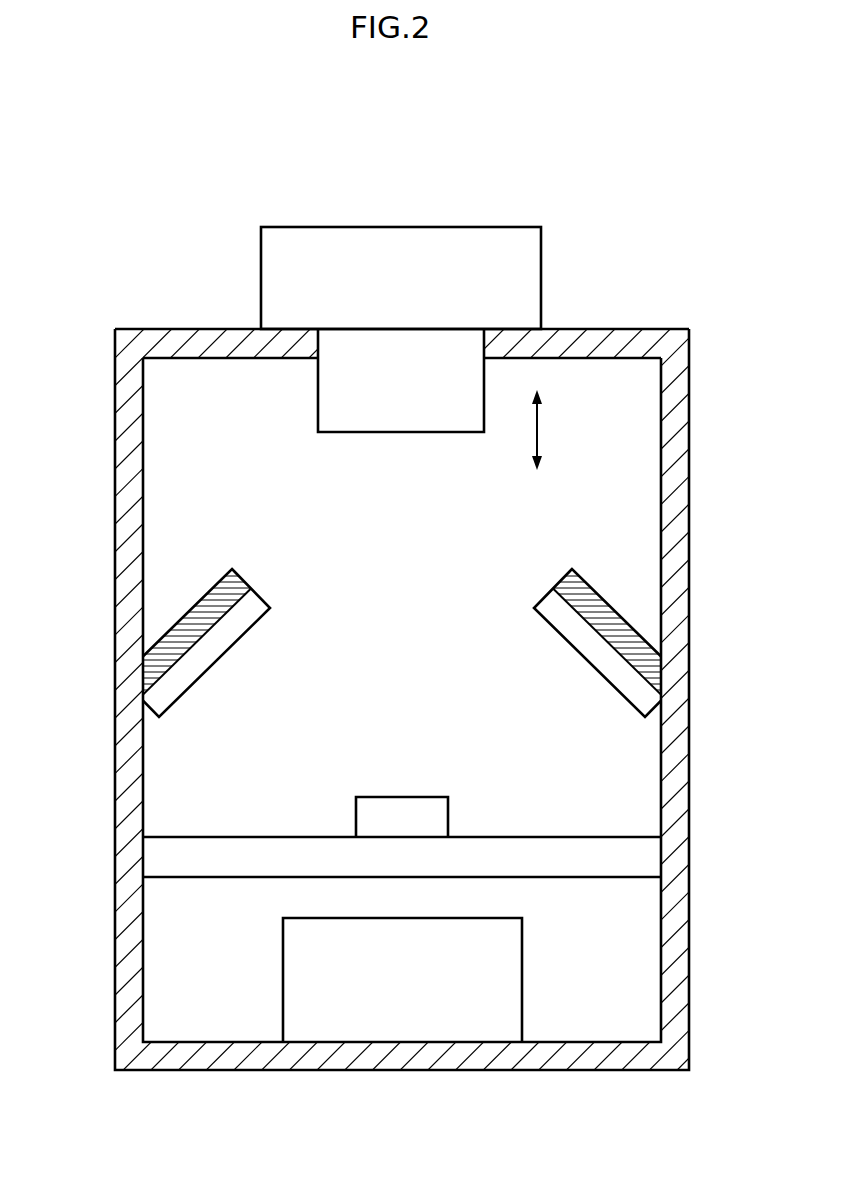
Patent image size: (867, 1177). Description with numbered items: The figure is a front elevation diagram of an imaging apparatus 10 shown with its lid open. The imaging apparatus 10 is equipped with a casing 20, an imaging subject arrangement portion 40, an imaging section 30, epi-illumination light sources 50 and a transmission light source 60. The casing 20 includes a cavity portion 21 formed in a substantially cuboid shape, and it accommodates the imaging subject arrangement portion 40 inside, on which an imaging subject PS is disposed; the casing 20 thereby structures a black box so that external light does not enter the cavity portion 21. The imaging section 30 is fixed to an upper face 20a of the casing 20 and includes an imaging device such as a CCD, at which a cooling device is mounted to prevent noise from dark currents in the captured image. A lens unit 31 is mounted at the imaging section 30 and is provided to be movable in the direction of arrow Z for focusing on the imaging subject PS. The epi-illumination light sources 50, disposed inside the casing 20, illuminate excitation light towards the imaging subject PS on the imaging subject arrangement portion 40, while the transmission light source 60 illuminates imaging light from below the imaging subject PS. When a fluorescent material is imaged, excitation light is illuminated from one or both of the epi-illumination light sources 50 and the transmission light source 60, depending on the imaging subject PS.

The imaging apparatus 10 is at (655, 163).
The casing 20 is at (675, 521).
The upper face 20a is at (665, 330).
The cavity portion 21 is at (645, 435).
The imaging section 30 is at (483, 245).
The lens unit 31 is at (337, 395).
The imaging subject arrangement portion 40 is at (648, 857).
The epi-illumination light sources 50 is at (200, 652).
The transmission light source 60 is at (473, 1020).
The imaging subject PS is at (402, 812).
The arrow Z direction Z is at (540, 425).